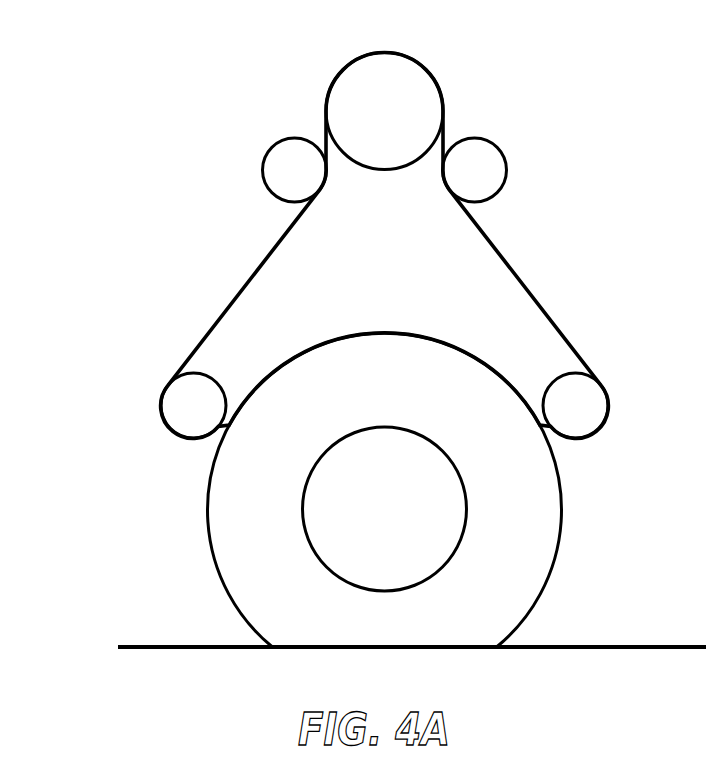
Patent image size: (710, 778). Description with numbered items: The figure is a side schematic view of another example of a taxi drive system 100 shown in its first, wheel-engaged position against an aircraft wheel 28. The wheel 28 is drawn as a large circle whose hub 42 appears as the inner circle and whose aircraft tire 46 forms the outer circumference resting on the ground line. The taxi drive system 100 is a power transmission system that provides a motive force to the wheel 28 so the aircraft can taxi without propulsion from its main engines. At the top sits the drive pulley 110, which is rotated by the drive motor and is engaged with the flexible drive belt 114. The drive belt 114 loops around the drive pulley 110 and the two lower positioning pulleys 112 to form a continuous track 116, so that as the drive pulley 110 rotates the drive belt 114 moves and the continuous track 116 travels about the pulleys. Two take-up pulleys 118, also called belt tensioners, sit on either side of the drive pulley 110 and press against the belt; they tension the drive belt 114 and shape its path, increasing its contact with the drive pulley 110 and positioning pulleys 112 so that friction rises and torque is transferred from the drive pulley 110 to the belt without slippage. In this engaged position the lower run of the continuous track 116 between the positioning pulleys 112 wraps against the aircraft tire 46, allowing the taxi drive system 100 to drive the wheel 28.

The taxi drive system 100 is at (192, 204).
The drive pulley 110 is at (408, 95).
The take-up pulleys 118 is at (280, 154).
The continuous track 116 is at (205, 283).
The drive belt 114 is at (522, 277).
The positioning pulleys 112 is at (193, 392).
The aircraft wheel 28 is at (391, 490).
The aircraft tire 46 is at (227, 539).
The hub 42 is at (315, 511).